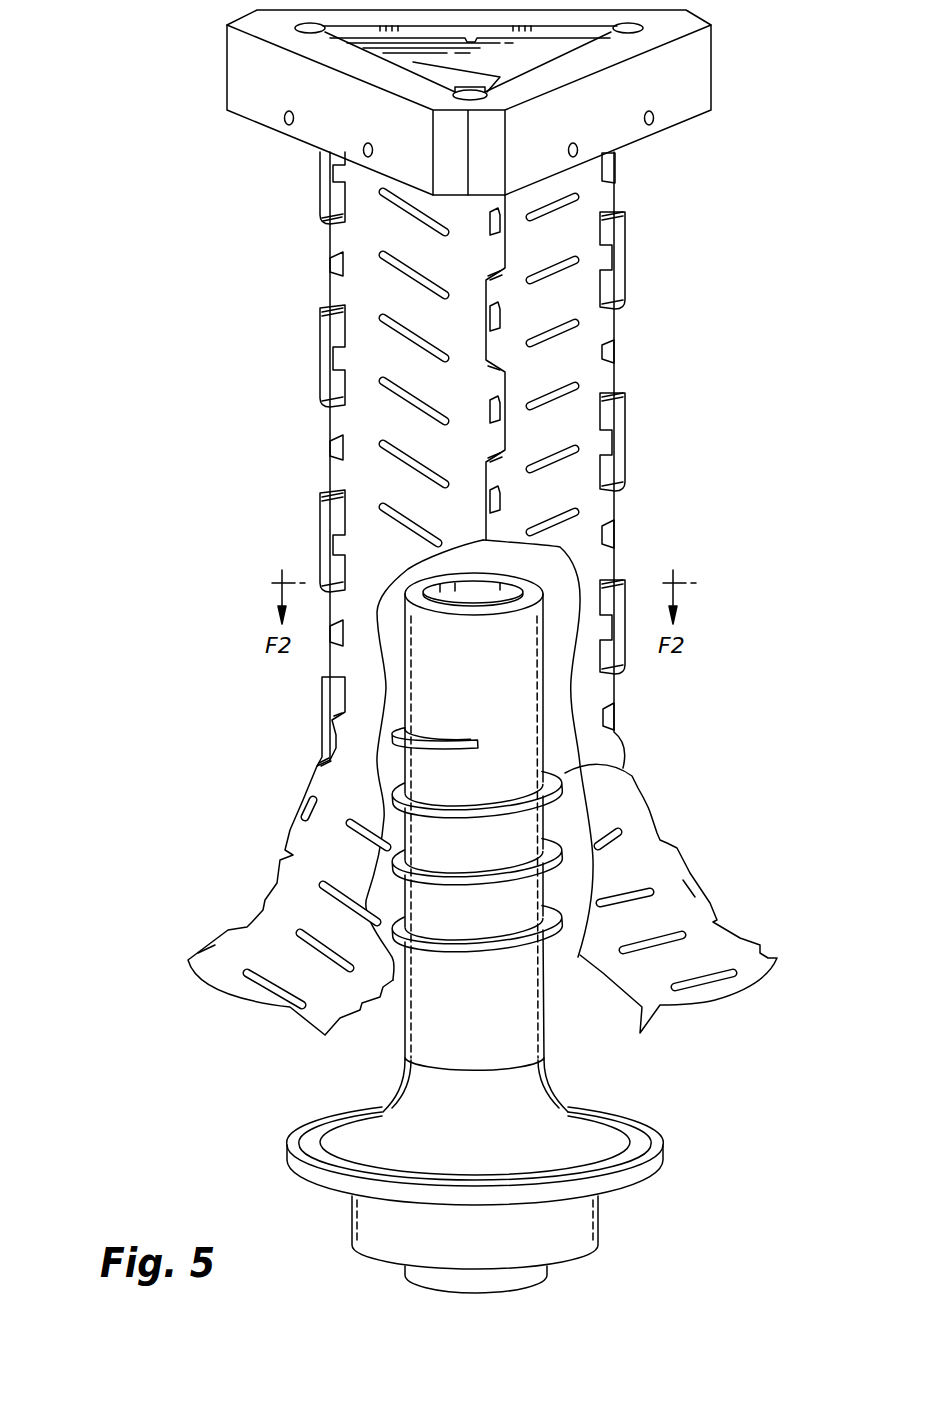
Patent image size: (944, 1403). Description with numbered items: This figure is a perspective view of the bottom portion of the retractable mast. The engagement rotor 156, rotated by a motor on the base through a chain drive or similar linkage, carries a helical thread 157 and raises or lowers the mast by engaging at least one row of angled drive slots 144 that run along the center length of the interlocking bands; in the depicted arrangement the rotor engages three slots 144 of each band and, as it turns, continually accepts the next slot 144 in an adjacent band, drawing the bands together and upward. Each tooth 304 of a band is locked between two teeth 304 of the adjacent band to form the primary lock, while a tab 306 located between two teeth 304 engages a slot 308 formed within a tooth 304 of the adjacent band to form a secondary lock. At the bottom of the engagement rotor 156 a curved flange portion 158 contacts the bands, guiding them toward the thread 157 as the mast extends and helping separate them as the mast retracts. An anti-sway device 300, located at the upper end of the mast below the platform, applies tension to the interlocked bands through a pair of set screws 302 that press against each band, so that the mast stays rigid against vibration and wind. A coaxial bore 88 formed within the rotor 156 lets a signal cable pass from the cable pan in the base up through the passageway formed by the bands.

The anti-sway device 300 is at (703, 83).
The set screws 302 is at (366, 151).
The tooth 304 is at (283, 858).
The retention tab 306 is at (330, 545).
The slot 308 is at (330, 262).
The angled drive slots 144 is at (560, 392).
The coaxial bore 88 is at (495, 596).
The engagement rotor 156 is at (497, 690).
The helical thread 157 is at (632, 776).
The curved flange portion 158 is at (618, 1108).